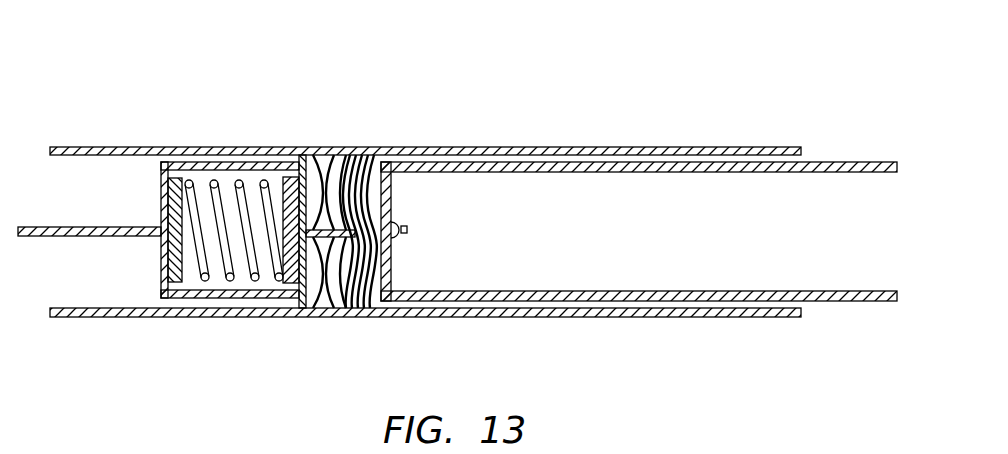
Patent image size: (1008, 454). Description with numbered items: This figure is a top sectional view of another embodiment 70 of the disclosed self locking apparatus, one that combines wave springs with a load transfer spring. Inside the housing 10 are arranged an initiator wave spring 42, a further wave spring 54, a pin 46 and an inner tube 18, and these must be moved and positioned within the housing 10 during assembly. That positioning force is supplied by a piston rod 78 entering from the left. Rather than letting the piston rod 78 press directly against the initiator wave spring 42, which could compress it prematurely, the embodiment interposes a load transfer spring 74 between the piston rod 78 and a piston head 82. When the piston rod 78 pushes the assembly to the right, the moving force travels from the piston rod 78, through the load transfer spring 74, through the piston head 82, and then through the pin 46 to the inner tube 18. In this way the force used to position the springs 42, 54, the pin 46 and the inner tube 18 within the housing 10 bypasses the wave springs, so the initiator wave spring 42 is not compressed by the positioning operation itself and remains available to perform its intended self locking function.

The housing 10 is at (712, 147).
The inner tube 18 is at (855, 173).
The initiator wave spring 42 is at (311, 302).
The pin 46 is at (407, 240).
The wave spring 54 is at (324, 158).
The self locking apparatus 70 is at (118, 90).
The load transfer spring 74 is at (170, 250).
The piston rod 78 is at (53, 227).
The piston head 82 is at (281, 177).